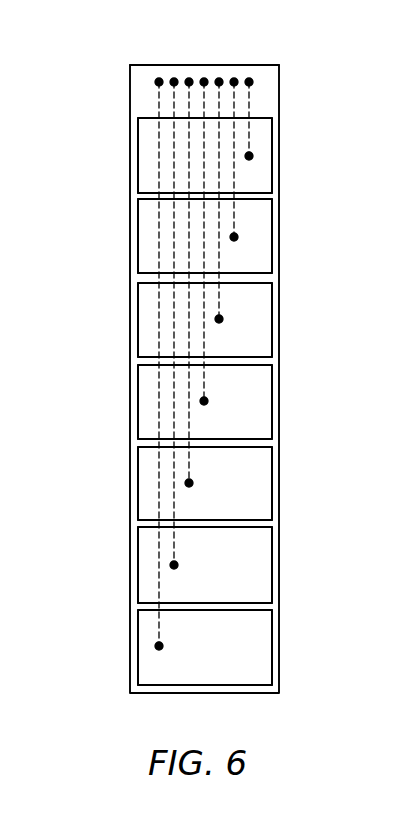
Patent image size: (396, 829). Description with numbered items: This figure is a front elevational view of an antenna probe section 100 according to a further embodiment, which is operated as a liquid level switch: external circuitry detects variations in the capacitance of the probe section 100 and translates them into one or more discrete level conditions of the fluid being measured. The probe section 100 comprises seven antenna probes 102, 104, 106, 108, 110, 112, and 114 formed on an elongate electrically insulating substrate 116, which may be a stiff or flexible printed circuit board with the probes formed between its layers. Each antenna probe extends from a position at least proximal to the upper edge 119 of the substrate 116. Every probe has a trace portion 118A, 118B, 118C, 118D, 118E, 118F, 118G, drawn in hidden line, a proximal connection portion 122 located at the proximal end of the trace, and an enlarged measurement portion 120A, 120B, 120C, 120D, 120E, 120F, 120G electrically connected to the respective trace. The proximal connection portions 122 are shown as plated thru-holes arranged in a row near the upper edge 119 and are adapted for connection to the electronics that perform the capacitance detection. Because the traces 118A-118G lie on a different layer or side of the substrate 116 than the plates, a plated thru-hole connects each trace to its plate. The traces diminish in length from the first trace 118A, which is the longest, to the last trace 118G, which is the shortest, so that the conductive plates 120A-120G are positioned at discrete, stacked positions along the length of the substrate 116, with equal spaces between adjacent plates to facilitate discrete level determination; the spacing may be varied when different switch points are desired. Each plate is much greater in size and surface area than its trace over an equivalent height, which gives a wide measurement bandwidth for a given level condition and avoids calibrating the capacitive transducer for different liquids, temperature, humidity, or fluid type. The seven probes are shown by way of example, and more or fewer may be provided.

The antenna probe section 100 is at (182, 374).
The antenna probe 102 is at (272, 648).
The antenna probe 104 is at (272, 566).
The antenna probe 106 is at (272, 483).
The antenna probe 108 is at (272, 401).
The antenna probe 110 is at (272, 320).
The antenna probe 112 is at (272, 240).
The antenna probe 114 is at (272, 160).
The elongate electrically insulating substrate 116 is at (279, 693).
The trace portion 118A is at (159, 627).
The trace portion 118B is at (174, 546).
The trace portion 118C is at (189, 464).
The trace portion 118D is at (204, 382).
The trace portion 118E is at (219, 300).
The trace portion 118F is at (234, 218).
The trace portion 118G is at (249, 100).
The upper edge 119 is at (226, 65).
The enlarged measurement portion 120A is at (147, 675).
The enlarged measurement portion 120B is at (147, 593).
The enlarged measurement portion 120C is at (147, 512).
The enlarged measurement portion 120D is at (147, 430).
The enlarged measurement portion 120E is at (147, 347).
The enlarged measurement portion 120F is at (147, 265).
The enlarged measurement portion 120G is at (147, 183).
The proximal connection portion 122 is at (189, 78).